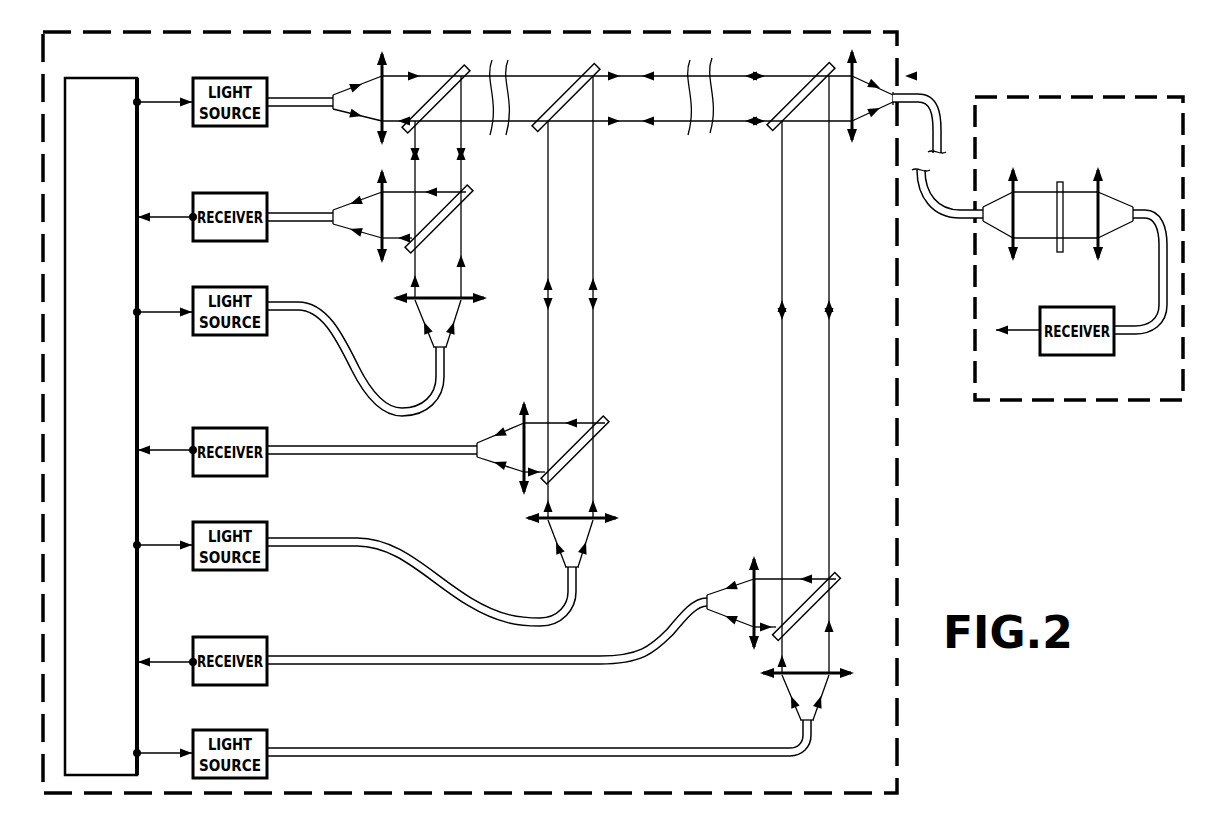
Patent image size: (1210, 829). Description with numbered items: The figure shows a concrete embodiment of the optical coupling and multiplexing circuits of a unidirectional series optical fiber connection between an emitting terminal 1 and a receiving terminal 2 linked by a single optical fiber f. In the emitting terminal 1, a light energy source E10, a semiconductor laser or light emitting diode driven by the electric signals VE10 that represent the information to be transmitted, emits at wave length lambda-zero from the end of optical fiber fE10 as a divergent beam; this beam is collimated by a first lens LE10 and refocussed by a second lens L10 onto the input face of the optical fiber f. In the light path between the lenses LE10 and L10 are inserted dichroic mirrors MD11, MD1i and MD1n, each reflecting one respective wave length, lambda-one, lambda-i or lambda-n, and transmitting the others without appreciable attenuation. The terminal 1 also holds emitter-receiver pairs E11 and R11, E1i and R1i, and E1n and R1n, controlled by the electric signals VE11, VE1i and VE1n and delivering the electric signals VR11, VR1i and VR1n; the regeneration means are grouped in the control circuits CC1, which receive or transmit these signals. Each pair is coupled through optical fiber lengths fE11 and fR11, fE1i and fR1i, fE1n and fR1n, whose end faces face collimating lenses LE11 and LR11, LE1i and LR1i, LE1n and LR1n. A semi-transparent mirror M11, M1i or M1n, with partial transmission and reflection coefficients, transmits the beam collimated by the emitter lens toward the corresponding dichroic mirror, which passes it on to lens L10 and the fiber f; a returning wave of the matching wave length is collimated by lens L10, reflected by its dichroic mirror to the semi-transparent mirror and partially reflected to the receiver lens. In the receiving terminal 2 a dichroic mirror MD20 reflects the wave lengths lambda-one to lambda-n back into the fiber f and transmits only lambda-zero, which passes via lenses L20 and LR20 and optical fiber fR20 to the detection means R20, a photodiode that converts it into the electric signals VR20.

The emitting terminal 1 is at (897, 462).
The receiving terminal 2 is at (1047, 400).
The optical fiber f is at (935, 110).
The control circuits CC1 is at (122, 78).
The light energy source E10 is at (246, 77).
The light emitter E11 is at (246, 286).
The light emitter E1i is at (246, 521).
The light emitter E1n is at (248, 729).
The opto-electronic detector R11 is at (244, 192).
The opto-electronic receiver R1i is at (244, 427).
The opto-electronic receiver R1n is at (248, 636).
The opto-electronic detection means R20 is at (1052, 354).
The electric signals VE10 is at (156, 101).
The electric signals VE11 is at (162, 311).
The electric signals VE1i is at (164, 544).
The electric signals VE1n is at (166, 753).
The electric signal VR11 is at (164, 216).
The electric signal VR1i is at (168, 449).
The electric signal VR1n is at (168, 661).
The electric signals VR20 is at (1016, 331).
The optical fiber fE10 is at (298, 101).
The optical fiber length fE11 is at (305, 308).
The optical fiber length fE1i is at (360, 540).
The optical fiber length fE1n is at (429, 752).
The optical fiber length fR11 is at (306, 216).
The optical fiber length fR1i is at (316, 449).
The optical fiber length fR1n is at (384, 660).
The optical fiber fR20 is at (1150, 333).
The first lens LE10 is at (378, 120).
The collimating lens LE11 is at (458, 300).
The collimating lens LE1i is at (600, 517).
The collimating lens LE1n is at (780, 676).
The collimating lens LR11 is at (378, 238).
The collimating lens LR1i is at (522, 470).
The collimating lens LR1n is at (752, 622).
The second lens L10 is at (850, 130).
The lens L20 is at (1015, 176).
The lens LR20 is at (1100, 176).
The dichroic mirror MD11 is at (440, 86).
The dichroic mirror MD1i is at (572, 84).
The dichroic mirror MD1n is at (802, 86).
The dichroic mirror MD20 is at (1055, 244).
The semi-transparent mirror M11 is at (456, 200).
The mirror M1i is at (605, 425).
The semi-transparent mirror M1n is at (807, 607).